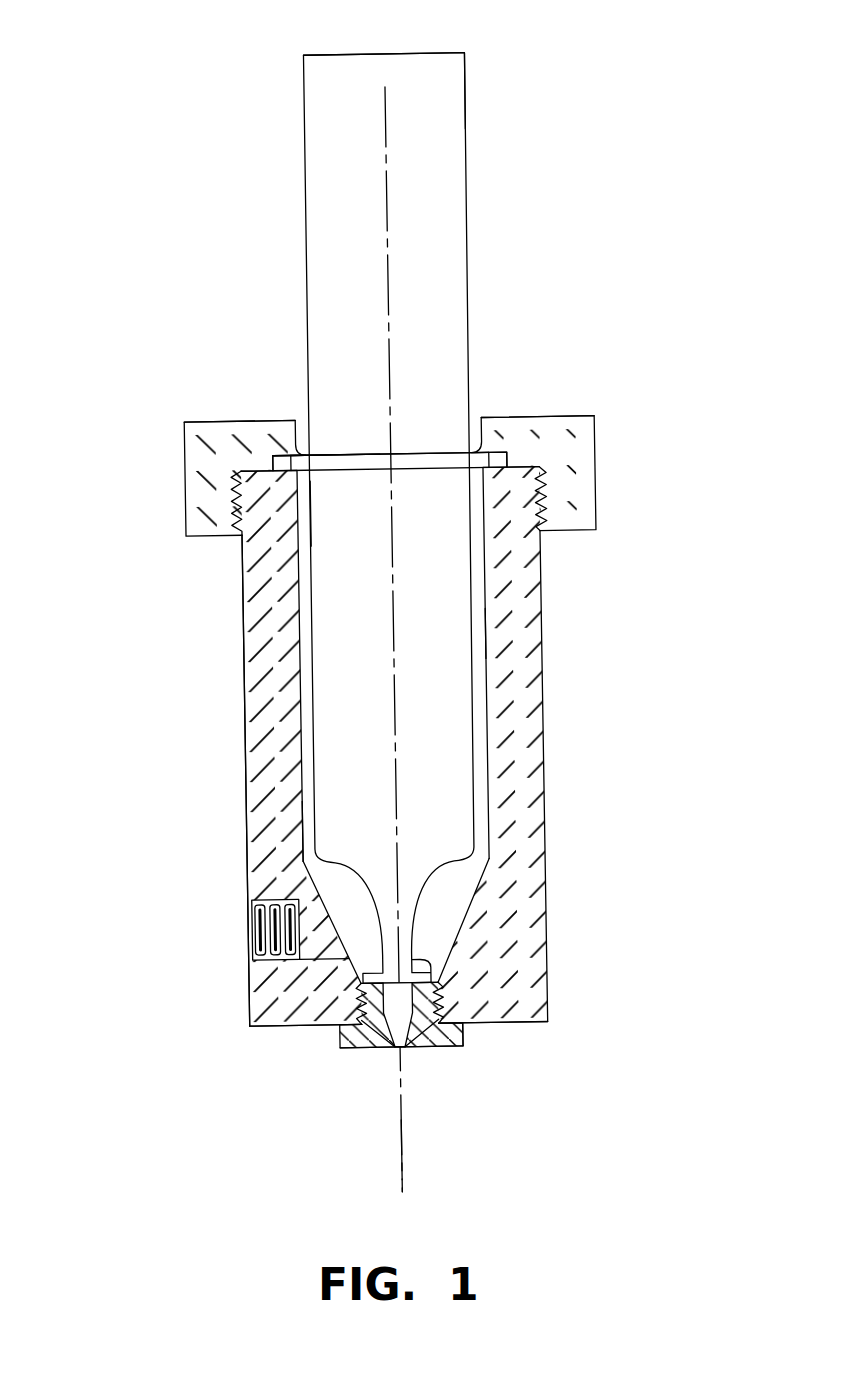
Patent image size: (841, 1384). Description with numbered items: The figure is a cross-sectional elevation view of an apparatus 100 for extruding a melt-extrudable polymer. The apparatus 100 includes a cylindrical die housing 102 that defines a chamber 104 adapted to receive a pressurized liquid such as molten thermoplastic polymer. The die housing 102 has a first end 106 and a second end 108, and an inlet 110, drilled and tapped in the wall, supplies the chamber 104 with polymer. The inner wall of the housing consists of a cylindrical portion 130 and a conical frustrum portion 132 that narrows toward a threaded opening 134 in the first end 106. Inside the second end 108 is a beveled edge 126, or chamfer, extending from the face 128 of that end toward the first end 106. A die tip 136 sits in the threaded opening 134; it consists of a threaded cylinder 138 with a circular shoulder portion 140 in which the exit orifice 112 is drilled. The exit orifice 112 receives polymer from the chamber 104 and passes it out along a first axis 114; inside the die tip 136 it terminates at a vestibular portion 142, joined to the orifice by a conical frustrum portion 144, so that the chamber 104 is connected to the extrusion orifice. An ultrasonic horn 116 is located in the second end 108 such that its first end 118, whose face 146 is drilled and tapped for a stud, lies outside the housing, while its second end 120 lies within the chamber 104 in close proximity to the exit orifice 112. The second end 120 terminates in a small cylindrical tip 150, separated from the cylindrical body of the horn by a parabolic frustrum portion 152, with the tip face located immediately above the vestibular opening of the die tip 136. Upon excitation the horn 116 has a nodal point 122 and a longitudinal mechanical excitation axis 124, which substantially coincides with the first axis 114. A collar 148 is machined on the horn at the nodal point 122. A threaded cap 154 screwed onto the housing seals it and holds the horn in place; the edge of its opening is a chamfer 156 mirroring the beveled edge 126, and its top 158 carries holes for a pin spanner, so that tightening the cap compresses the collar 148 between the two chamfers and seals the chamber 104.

The apparatus 100 is at (208, 722).
The die housing 102 is at (545, 806).
The chamber 104 is at (468, 890).
The first end 106 is at (545, 985).
The second end 108 is at (548, 521).
The inlet 110 is at (250, 931).
The exit orifice 112 is at (378, 1049).
The first axis 114 is at (392, 1128).
The ultrasonic horn 116 is at (441, 283).
The first end of the horn 118 is at (464, 83).
The second end of the horn 120 is at (413, 1050).
The nodal point 122 is at (377, 457).
The longitudinal mechanical excitation axis 124 is at (389, 223).
The beveled edge 126 is at (310, 480).
The face of the second end 128 is at (507, 458).
The cylindrical portion 130 is at (491, 628).
The conical frustrum portion 132 is at (470, 914).
The threaded opening 134 is at (466, 1022).
The die tip 136 is at (338, 1030).
The threaded cylinder 138 is at (352, 980).
The circular shoulder portion 140 is at (463, 1040).
The vestibular portion 142 is at (410, 1052).
The conical frustrum portion 144 is at (338, 1048).
The face of the first end of the horn 146 is at (355, 53).
The collar 148 is at (425, 457).
The small cylindrical tip 150 is at (341, 960).
The parabolic frustrum portion 152 is at (342, 870).
The threaded cap 154 is at (186, 495).
The chamfer 156 is at (198, 422).
The top of the cap 158 is at (596, 425).